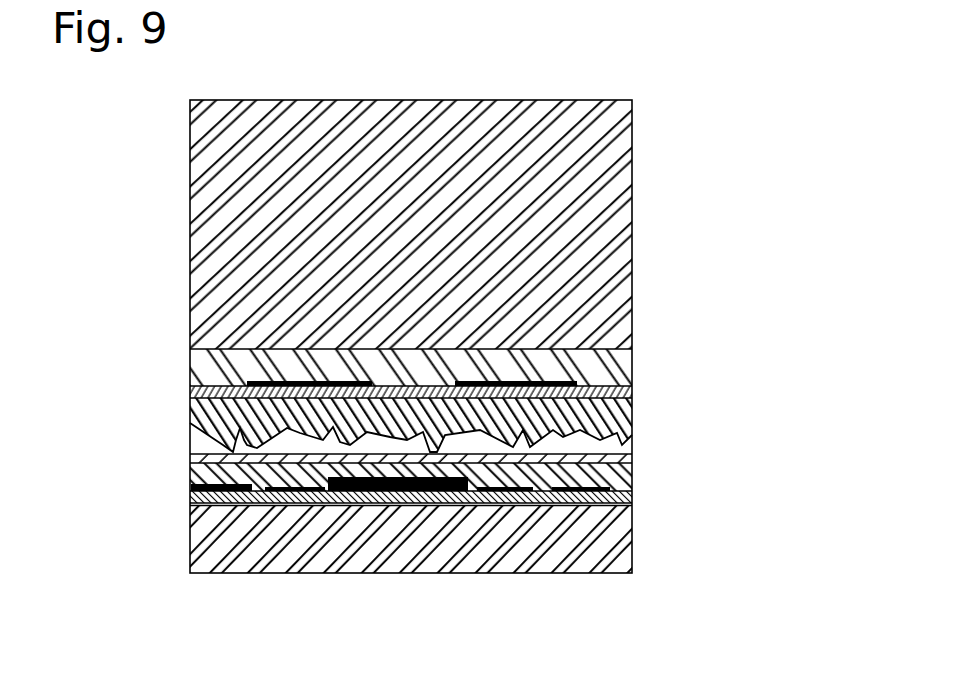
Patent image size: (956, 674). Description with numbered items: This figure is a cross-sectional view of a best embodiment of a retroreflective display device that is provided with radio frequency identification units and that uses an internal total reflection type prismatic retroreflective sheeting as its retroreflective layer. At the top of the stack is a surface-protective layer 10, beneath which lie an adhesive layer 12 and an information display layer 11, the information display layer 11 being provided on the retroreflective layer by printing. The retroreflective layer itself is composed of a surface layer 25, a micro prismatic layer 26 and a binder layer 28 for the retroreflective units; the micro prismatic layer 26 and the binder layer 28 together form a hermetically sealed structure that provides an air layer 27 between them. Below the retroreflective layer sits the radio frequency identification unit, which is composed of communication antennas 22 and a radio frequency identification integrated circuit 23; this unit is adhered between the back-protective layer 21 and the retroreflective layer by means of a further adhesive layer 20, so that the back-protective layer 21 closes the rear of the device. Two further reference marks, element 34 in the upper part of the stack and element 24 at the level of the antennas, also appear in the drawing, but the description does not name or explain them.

The surface-protective layer 10 is at (623, 232).
The adhesive layer 34 is at (565, 318).
The information display layer 11 is at (403, 450).
The adhesive layer 12 is at (622, 365).
The surface layer 25 is at (624, 397).
The micro prismatic layer 26 is at (622, 418).
The air layer 27 is at (620, 451).
The binder layer 28 is at (618, 462).
The adhesive layer 20 is at (618, 478).
The back-protective layer 21 is at (585, 533).
The first electrode 24 is at (210, 498).
The communication antennas 22 is at (285, 492).
The radio frequency identification integrated circuit 23 is at (450, 492).